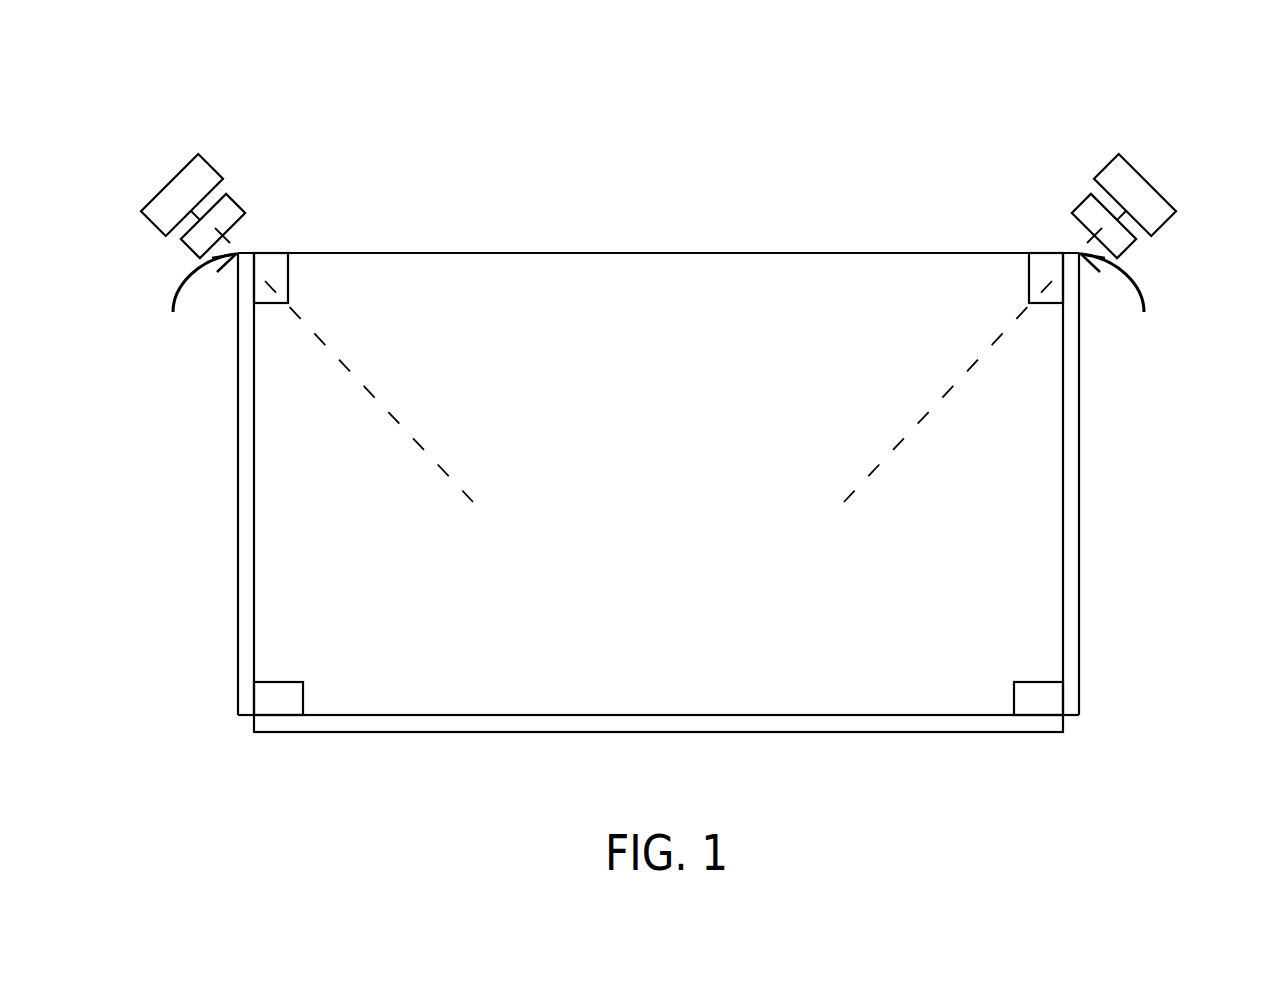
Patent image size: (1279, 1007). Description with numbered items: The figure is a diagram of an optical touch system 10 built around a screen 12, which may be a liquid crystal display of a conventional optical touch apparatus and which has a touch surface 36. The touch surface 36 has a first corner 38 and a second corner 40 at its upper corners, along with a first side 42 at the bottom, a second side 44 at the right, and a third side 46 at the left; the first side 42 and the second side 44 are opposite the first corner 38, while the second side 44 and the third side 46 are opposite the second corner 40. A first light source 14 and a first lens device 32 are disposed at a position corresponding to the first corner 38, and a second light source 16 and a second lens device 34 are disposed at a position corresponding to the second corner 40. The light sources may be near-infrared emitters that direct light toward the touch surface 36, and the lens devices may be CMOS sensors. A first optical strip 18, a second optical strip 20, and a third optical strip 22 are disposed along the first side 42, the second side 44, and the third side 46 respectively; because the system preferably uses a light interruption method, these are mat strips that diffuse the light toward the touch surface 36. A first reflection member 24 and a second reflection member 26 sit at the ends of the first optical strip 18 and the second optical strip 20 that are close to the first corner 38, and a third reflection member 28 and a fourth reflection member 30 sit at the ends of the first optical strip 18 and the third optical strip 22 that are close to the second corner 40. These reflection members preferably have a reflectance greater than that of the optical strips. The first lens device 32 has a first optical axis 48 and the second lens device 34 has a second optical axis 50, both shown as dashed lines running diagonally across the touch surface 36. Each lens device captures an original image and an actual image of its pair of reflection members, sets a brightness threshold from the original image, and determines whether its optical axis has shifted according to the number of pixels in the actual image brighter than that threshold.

The optical touch system 10 is at (1097, 90).
The screen 12 is at (720, 253).
The first light source 14 is at (238, 202).
The second light source 16 is at (1079, 202).
The first optical strip 18 is at (513, 727).
The second optical strip 20 is at (1077, 478).
The third optical strip 22 is at (240, 478).
The first reflection member 24 is at (298, 693).
The second reflection member 26 is at (1045, 272).
The third reflection member 28 is at (1019, 693).
The fourth reflection member 30 is at (270, 272).
The first lens device 32 is at (158, 192).
The second lens device 34 is at (1159, 192).
The touch surface 36 is at (791, 681).
The first corner 38 is at (194, 301).
The second corner 40 is at (1123, 301).
The first side 42 is at (640, 715).
The second side 44 is at (1060, 437).
The third side 46 is at (258, 437).
The first optical axis 48 is at (398, 422).
The second optical axis 50 is at (920, 422).